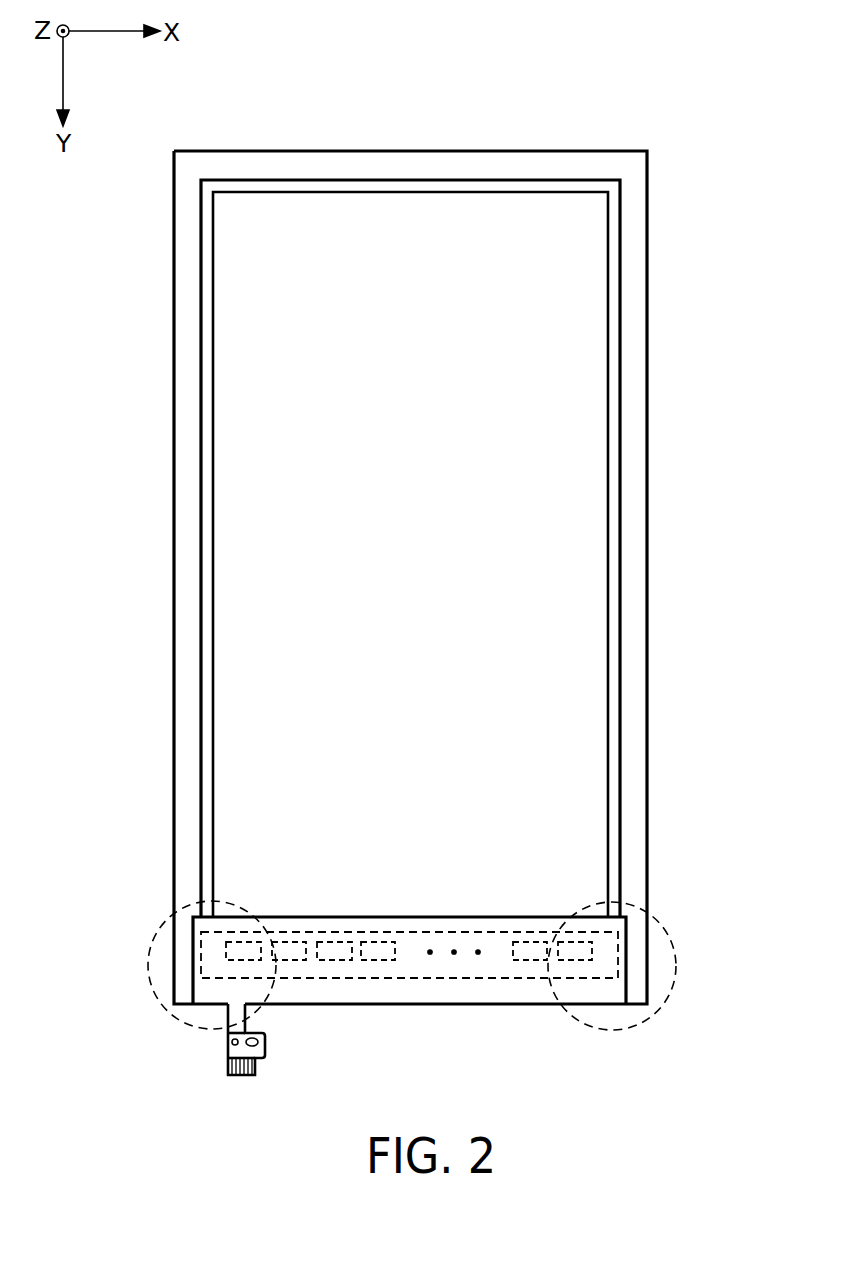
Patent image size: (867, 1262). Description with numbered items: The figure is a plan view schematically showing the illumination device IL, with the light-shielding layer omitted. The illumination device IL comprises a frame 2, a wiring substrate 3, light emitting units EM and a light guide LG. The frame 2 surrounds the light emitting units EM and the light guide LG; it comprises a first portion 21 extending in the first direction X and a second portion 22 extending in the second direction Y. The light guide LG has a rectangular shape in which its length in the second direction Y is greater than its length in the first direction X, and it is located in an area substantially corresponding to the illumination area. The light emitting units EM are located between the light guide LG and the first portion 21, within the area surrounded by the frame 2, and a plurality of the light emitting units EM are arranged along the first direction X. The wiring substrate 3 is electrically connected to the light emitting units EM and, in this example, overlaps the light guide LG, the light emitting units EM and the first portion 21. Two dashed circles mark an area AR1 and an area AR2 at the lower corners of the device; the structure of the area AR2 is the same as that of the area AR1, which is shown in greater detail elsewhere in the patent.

The illumination device IL is at (249, 126).
The frame 2 is at (174, 708).
The second portion 22 is at (187, 781).
The light guide LG is at (237, 851).
The wiring substrate 3 is at (298, 985).
The first portion 21 is at (472, 992).
The light emitting units EM is at (333, 960).
The area AR1 is at (138, 1004).
The area AR2 is at (688, 1008).